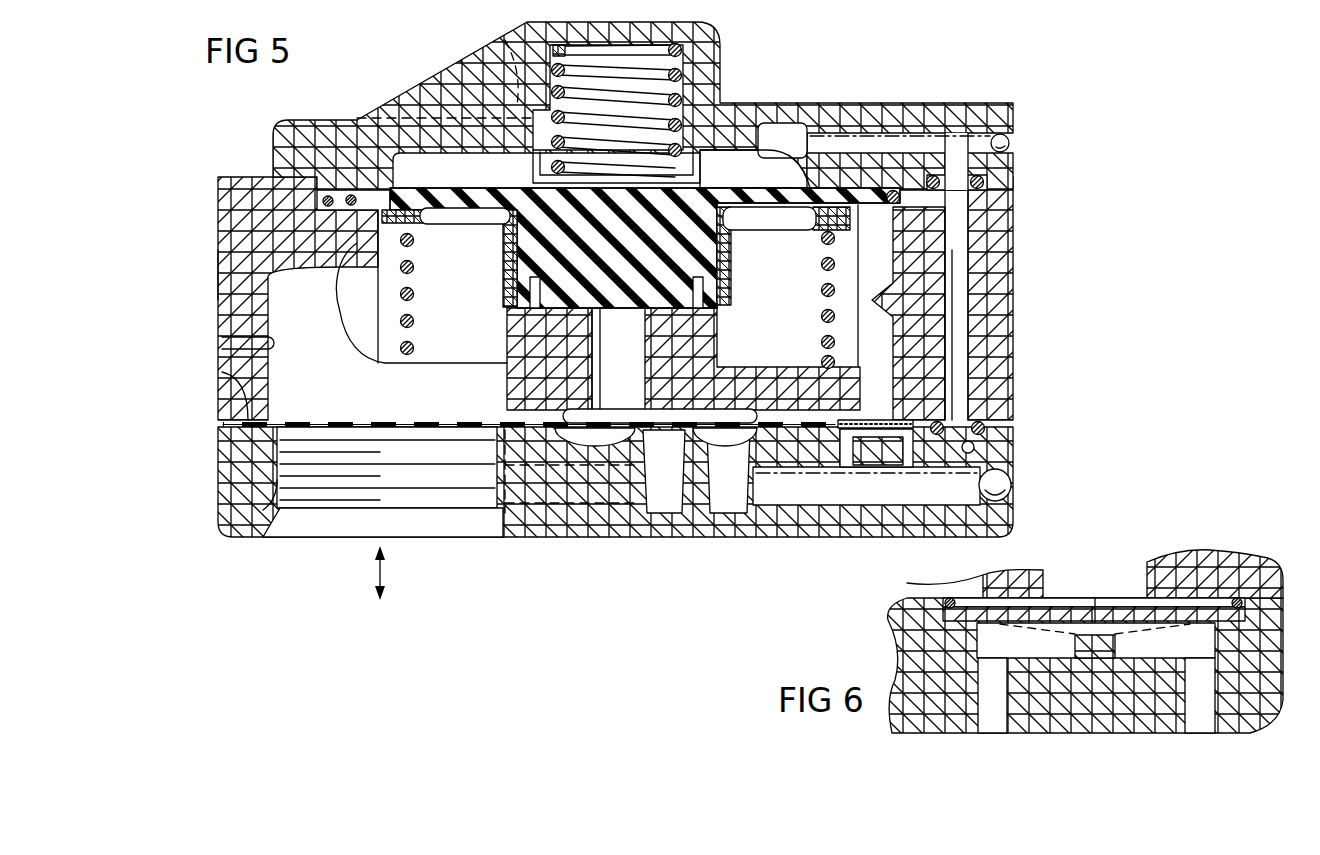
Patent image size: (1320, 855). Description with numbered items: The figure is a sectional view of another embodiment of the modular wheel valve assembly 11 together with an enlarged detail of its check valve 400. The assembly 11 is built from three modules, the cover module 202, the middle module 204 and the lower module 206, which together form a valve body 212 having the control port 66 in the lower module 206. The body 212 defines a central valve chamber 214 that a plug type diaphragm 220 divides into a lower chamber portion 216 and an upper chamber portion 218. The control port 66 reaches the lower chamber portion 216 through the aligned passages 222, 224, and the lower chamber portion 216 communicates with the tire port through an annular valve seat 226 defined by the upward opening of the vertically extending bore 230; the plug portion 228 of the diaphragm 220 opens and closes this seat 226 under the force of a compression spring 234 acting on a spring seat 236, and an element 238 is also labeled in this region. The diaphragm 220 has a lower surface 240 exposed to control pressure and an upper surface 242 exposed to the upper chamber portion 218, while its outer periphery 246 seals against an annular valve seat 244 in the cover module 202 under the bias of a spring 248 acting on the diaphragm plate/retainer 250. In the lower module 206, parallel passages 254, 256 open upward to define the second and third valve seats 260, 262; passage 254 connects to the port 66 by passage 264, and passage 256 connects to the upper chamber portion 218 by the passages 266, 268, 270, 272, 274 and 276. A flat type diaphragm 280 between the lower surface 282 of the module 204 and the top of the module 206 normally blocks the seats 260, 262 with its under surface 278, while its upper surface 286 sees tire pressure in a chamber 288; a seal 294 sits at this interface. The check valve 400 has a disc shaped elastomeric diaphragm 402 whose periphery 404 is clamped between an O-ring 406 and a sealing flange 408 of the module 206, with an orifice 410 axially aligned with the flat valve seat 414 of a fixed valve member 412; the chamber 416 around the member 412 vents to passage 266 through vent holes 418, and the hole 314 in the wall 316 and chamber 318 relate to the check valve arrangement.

In FIG. 5, the valve assembly 11 is at (412, 83).
In FIG. 5, the inlet or control port 66 is at (333, 523).
In FIG. 5, the cover module 202 is at (277, 153).
In FIG. 5, the module 204 is at (230, 212).
In FIG. 5, the module 206 is at (235, 480).
In FIG. 6, the module 206 is at (1247, 693).
In FIG. 5, the valve body 212 is at (228, 262).
In FIG. 5, the central valve chamber 214 is at (428, 177).
In FIG. 5, the lower chamber portion 216 is at (340, 275).
In FIG. 5, the upper chamber portion 218 is at (507, 177).
In FIG. 5, the plug type diaphragm 220 is at (517, 184).
In FIG. 5, the passage 222 is at (287, 487).
In FIG. 5, the passage 224 is at (225, 343).
In FIG. 5, the annular valve seat 226 is at (590, 322).
In FIG. 5, the plug portion 228 is at (517, 255).
In FIG. 5, the vertically extending bore 230 is at (600, 373).
In FIG. 5, the compression spring 234 is at (705, 58).
In FIG. 5, the spring seat 236 is at (717, 147).
In FIG. 5, the retainer 238 is at (590, 310).
In FIG. 5, the lower surface 240 is at (745, 232).
In FIG. 5, the upper surface 242 is at (790, 190).
In FIG. 5, the annular valve seat 244 is at (365, 162).
In FIG. 5, the outer periphery 246 is at (850, 210).
In FIG. 5, the spring 248 is at (822, 283).
In FIG. 5, the diaphragm plate/retainer 250 is at (858, 217).
In FIG. 5, the passage 254 is at (660, 500).
In FIG. 5, the passage 256 is at (727, 497).
In FIG. 5, the second valve seat 260 is at (625, 445).
In FIG. 5, the third valve seat 262 is at (750, 435).
In FIG. 5, the passage 264 is at (523, 513).
In FIG. 5, the passage 266 is at (773, 493).
In FIG. 5, the passage 268 is at (975, 447).
In FIG. 5, the passage 270 is at (967, 188).
In FIG. 5, the passage 272 is at (972, 175).
In FIG. 5, the passage 274 is at (943, 140).
In FIG. 5, the passage 276 is at (780, 133).
In FIG. 5, the under surface 278 is at (745, 432).
In FIG. 5, the flat type diaphragm 280 is at (677, 417).
In FIG. 5, the lower surface 282 is at (340, 428).
In FIG. 5, the upper surface 286 is at (595, 425).
In FIG. 5, the chamber 288 is at (726, 453).
In FIG. 5, the seal 294 is at (225, 372).
In FIG. 5, the hole 314 is at (883, 333).
In FIG. 6, the hole 314 is at (1130, 560).
In FIG. 5, the wall 316 is at (897, 297).
In FIG. 5, the chamber 318 is at (465, 301).
In FIG. 5, the check valve 400 is at (870, 418).
In FIG. 6, the check valve 400 is at (1096, 568).
In FIG. 5, the diaphragm 402 is at (875, 420).
In FIG. 6, the diaphragm 402 is at (1183, 597).
In FIG. 6, the periphery 404 is at (1230, 600).
In FIG. 6, the O-ring 406 is at (943, 601).
In FIG. 6, the sealing flange 408 is at (908, 630).
In FIG. 5, the orifice 410 is at (876, 448).
In FIG. 6, the orifice 410 is at (1093, 612).
In FIG. 6, the fixed valve member 412 is at (1075, 645).
In FIG. 6, the flat valve seat 414 is at (1097, 640).
In FIG. 6, the chamber 416 is at (1198, 654).
In FIG. 5, the vent holes 418 is at (903, 457).
In FIG. 6, the vent holes 418 is at (1200, 720).